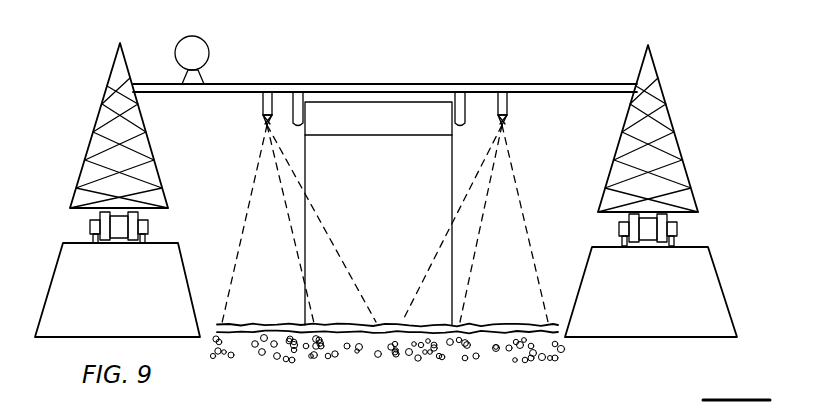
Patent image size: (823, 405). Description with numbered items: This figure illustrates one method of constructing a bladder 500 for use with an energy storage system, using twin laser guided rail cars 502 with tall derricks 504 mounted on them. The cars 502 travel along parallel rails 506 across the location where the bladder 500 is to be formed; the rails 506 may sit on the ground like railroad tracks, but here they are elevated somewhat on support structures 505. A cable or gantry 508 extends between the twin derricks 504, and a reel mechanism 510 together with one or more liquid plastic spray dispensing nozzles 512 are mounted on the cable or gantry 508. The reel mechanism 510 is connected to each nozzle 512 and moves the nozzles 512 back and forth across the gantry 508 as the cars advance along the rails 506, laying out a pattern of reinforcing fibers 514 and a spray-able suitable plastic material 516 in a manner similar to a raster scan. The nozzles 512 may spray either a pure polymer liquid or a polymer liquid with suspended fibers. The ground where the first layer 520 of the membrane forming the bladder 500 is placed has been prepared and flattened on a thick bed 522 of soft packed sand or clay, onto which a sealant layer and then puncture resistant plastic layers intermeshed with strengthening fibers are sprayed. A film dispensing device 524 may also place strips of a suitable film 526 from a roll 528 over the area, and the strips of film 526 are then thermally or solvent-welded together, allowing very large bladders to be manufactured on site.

The bladder 500 is at (393, 192).
The laser guided rail cars 502 is at (90, 224).
The derricks 504 is at (100, 143).
The support structures 505 is at (386, 290).
The rails 506 is at (140, 246).
The cable or gantry 508 is at (534, 88).
The reel mechanism 510 is at (200, 50).
The liquid plastic spray dispensing nozzles 512 is at (262, 120).
The reinforcing fibers 514 is at (281, 320).
The spray-able plastic material 516 is at (244, 208).
The first layer 520 is at (290, 333).
The bed 522 is at (405, 345).
The film dispensing device 524 is at (300, 96).
The film 526 is at (332, 322).
The roll 528 is at (378, 118).